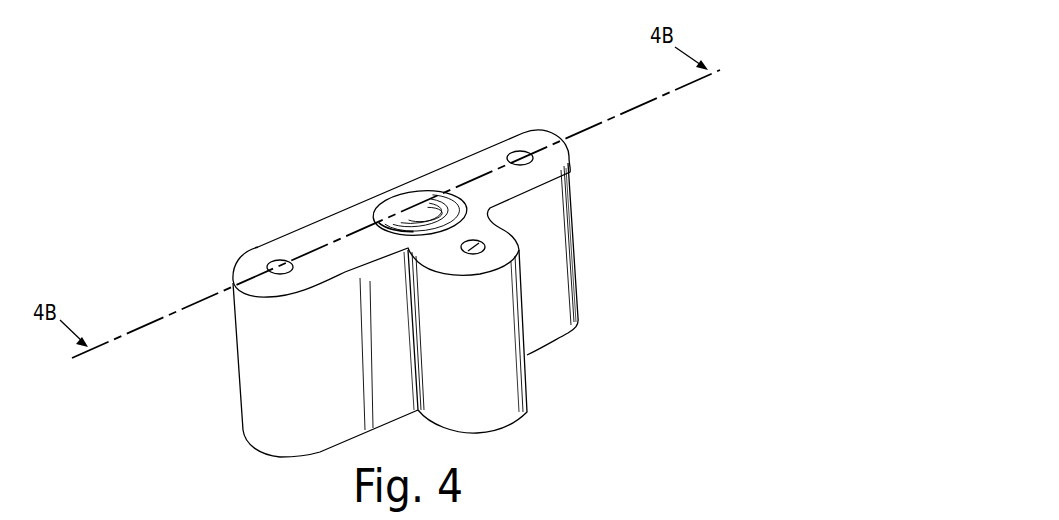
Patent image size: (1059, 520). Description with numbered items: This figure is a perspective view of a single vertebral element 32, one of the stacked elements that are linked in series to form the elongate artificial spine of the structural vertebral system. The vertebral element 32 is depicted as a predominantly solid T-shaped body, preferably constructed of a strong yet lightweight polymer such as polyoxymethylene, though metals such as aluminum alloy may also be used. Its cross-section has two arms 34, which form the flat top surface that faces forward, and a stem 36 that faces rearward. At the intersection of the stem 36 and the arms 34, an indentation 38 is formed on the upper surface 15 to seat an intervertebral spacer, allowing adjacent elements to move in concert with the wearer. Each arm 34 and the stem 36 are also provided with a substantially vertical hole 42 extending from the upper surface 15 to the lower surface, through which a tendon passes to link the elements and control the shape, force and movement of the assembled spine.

The vertebral element 32 is at (192, 131).
The upper surface 15 is at (361, 265).
The arms 34 is at (318, 368).
The stem 36 is at (485, 385).
The indentation 38 is at (445, 192).
The hole 42 is at (487, 240).